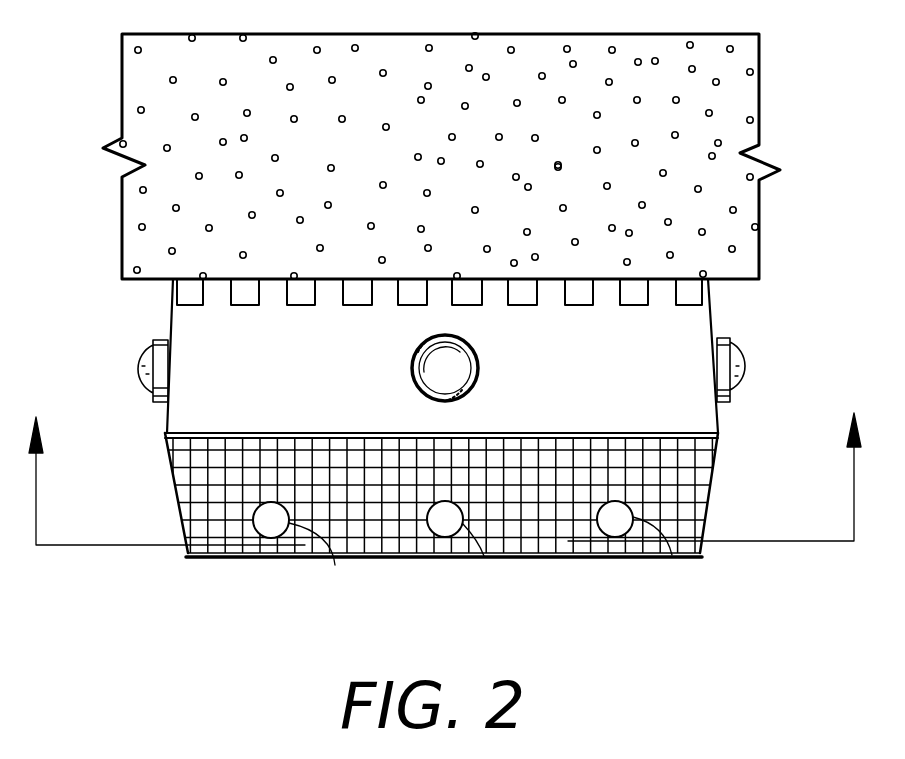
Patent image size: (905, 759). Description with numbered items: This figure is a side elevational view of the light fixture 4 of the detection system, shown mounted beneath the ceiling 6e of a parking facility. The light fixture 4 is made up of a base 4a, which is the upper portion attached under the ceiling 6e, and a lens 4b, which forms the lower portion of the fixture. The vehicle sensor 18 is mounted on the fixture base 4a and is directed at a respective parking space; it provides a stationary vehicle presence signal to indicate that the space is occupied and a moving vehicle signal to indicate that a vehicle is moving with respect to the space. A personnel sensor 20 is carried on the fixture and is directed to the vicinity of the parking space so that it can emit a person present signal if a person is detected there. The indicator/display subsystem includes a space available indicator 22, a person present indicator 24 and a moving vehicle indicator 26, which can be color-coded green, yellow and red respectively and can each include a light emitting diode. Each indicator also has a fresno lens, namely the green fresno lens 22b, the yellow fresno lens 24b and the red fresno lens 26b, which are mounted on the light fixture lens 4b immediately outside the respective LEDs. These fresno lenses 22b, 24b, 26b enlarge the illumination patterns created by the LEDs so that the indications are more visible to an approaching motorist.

The ceiling 6e is at (759, 279).
The base 4a is at (618, 379).
The lens 4b is at (700, 557).
The light fixture 4 is at (163, 605).
The vehicle sensor 18 is at (425, 345).
The personnel sensor 20 is at (153, 338).
The space available indicator 22 is at (266, 538).
The fresno lens 22b is at (335, 565).
The person present indicator 24 is at (440, 537).
The fresno lens 24b is at (484, 556).
The moving vehicle indicator 26 is at (616, 537).
The fresno lens 26b is at (672, 555).